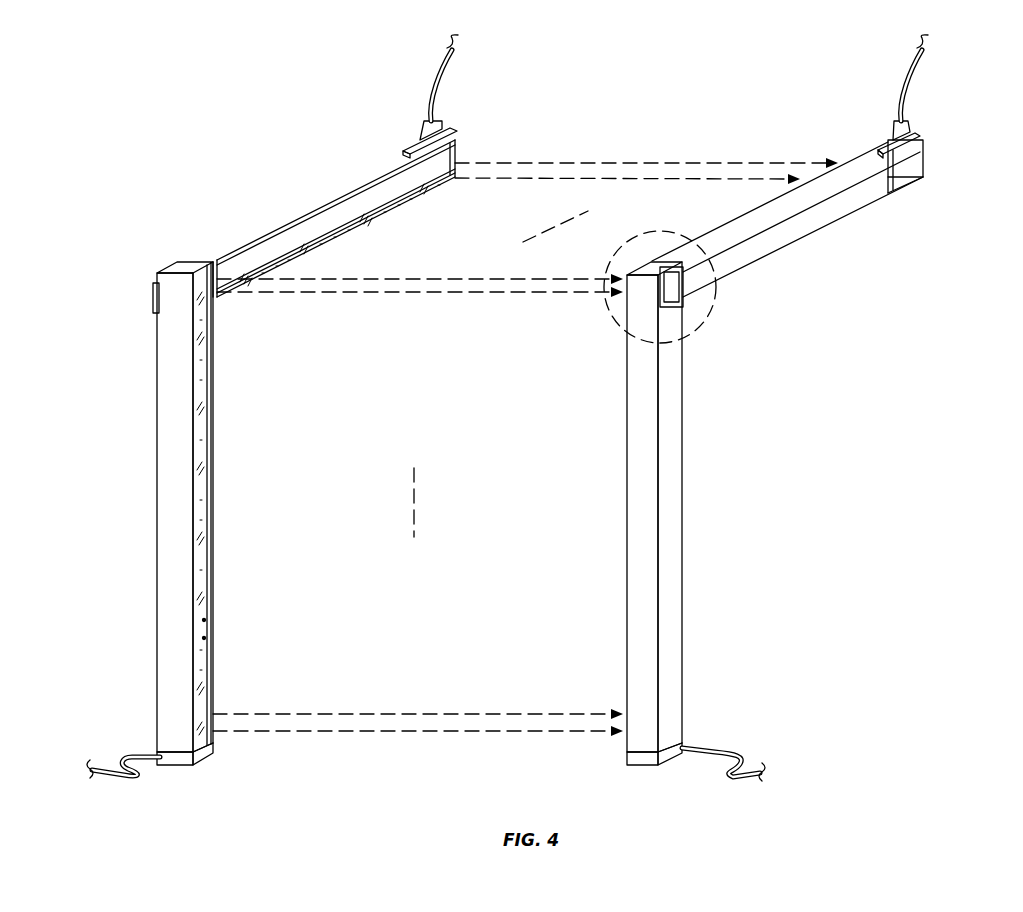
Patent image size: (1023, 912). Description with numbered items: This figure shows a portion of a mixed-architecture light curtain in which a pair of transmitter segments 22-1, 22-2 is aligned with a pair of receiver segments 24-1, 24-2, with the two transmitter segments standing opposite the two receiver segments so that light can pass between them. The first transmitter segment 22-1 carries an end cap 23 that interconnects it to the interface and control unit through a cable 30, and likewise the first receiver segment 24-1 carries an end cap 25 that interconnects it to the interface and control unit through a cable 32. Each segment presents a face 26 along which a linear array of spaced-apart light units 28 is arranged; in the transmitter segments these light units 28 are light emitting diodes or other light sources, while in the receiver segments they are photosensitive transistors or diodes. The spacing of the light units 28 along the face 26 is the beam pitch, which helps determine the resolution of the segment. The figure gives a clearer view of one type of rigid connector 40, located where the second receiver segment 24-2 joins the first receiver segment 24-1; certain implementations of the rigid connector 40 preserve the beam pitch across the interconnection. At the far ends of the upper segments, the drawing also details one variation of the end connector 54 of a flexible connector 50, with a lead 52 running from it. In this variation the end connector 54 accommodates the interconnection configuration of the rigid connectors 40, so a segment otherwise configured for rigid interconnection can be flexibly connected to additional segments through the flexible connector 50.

The first transmitter segment 22-1 is at (178, 578).
The second transmitter segment 22-2 is at (375, 170).
The end cap 23 is at (182, 766).
The first receiver segment 24-1 is at (678, 585).
The second receiver segment 24-2 is at (798, 228).
The end cap 25 is at (643, 766).
The face 26 is at (213, 497).
The light units 28 is at (204, 638).
The cable 30 is at (130, 757).
The cable 32 is at (738, 760).
The rigid connector 40 is at (702, 330).
The flexible connector 50 is at (683, 96).
The cable 52 is at (432, 88).
The end connector 54 is at (468, 120).